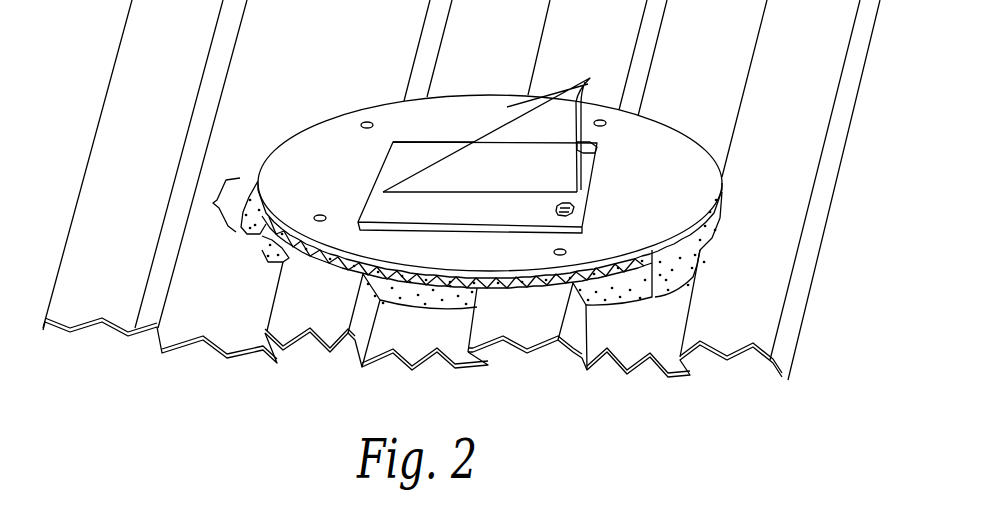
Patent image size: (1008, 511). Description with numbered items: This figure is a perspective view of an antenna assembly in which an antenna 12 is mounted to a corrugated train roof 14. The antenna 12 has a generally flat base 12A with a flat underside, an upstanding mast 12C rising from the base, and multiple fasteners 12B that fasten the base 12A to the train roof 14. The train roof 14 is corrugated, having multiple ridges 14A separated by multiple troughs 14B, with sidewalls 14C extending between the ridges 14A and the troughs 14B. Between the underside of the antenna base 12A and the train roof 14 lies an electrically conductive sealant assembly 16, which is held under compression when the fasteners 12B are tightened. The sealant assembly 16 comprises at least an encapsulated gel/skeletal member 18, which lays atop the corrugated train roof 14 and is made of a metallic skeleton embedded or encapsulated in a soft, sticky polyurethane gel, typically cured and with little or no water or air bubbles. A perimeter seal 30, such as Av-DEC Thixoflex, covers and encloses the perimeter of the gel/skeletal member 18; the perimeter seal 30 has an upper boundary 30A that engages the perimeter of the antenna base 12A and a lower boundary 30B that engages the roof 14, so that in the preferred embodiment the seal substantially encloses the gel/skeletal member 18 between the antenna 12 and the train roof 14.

The antenna 12 is at (442, 125).
The base 12A is at (663, 204).
The fasteners 12B is at (597, 144).
The upstanding mast 12C is at (533, 157).
The train roof 14 is at (747, 324).
The ridges 14A is at (185, 76).
The troughs 14B is at (295, 72).
The sidewalls 14C is at (213, 78).
The electrically conductive sealant assembly 16 is at (213, 203).
The encapsulated gel/skeletal member 18 is at (722, 176).
The perimeter seal 30 is at (717, 207).
The upper boundary 30A is at (258, 180).
The lower boundary 30B is at (248, 232).